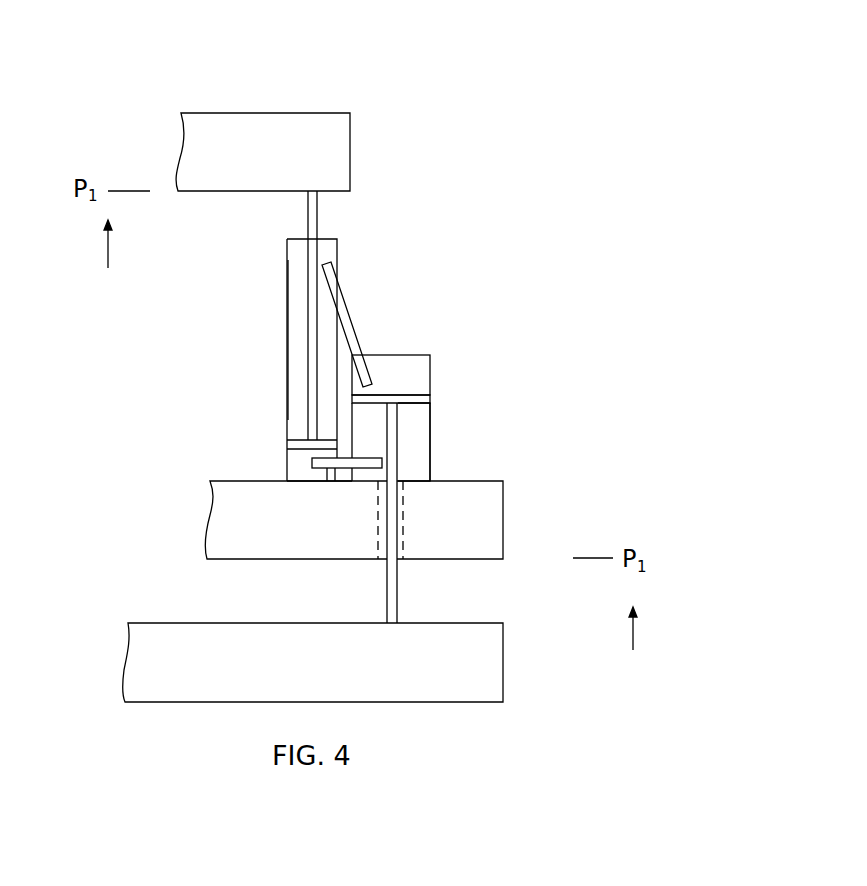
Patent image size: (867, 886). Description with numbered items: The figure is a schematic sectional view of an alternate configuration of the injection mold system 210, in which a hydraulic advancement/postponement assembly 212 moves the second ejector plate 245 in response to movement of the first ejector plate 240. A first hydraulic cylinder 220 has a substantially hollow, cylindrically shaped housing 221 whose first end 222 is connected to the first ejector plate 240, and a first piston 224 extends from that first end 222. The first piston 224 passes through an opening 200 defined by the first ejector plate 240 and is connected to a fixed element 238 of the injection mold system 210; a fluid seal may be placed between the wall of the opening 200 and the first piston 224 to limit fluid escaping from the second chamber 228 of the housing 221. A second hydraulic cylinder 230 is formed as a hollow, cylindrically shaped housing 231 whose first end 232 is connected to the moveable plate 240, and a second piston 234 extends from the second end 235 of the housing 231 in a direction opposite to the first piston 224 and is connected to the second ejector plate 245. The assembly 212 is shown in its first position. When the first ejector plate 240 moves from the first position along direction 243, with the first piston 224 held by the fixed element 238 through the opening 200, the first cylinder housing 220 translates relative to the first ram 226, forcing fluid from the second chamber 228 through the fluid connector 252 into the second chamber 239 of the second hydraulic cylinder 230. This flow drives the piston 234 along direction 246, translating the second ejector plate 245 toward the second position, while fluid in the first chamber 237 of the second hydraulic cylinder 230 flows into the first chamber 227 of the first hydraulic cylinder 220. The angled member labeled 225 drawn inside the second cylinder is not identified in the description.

The injection mold system 210 is at (503, 72).
The hydraulic advancement/postponement assembly 212 is at (505, 248).
The first hydraulic cylinder 220 is at (462, 340).
The housing 221 is at (432, 372).
The first end 222 is at (436, 472).
The first piston 224 is at (397, 462).
The tilted lever 225 is at (400, 340).
The first ram 226 is at (432, 398).
The first chamber 227 is at (417, 385).
The second chamber 228 is at (372, 440).
The second hydraulic cylinder 230 is at (235, 365).
The housing 231 is at (287, 253).
The first end 232 is at (275, 468).
The second piston 234 is at (303, 332).
The second end 235 is at (302, 228).
The first chamber 237 is at (297, 290).
The fixed element 238 is at (503, 656).
The second chamber 239 is at (297, 460).
The first ejector plate 240 is at (503, 516).
The direction 243 is at (633, 628).
The second ejector plate 245 is at (350, 150).
The direction 246 is at (108, 252).
The fluid connector 252 is at (327, 481).
The opening 200 is at (403, 548).